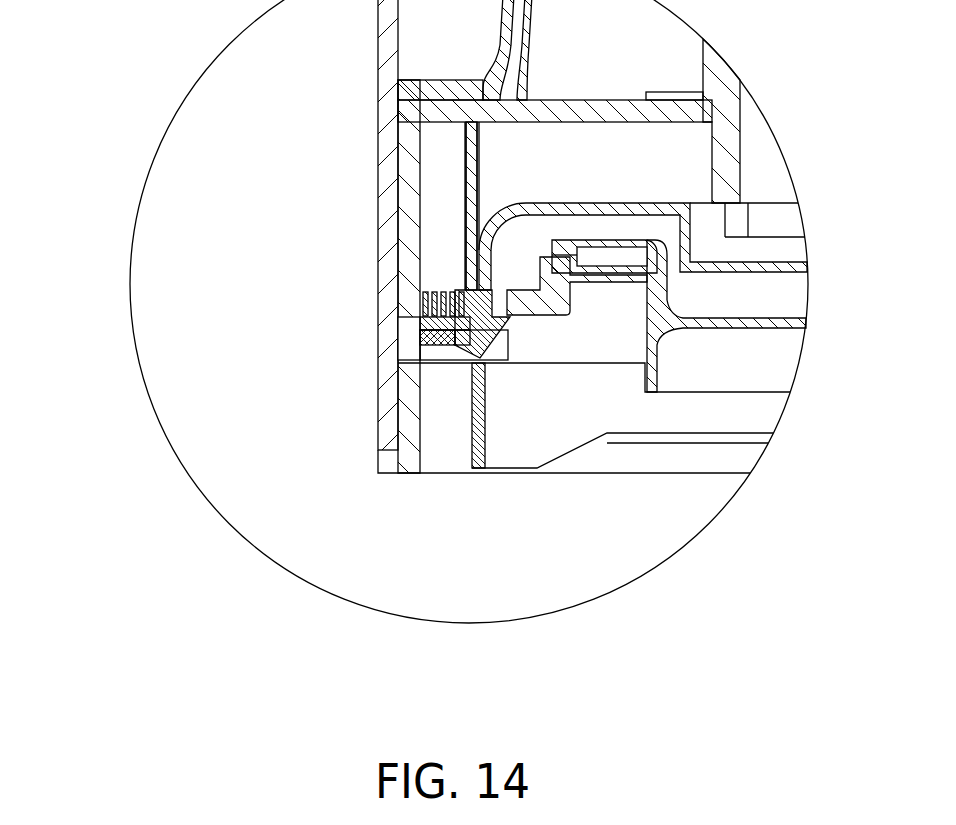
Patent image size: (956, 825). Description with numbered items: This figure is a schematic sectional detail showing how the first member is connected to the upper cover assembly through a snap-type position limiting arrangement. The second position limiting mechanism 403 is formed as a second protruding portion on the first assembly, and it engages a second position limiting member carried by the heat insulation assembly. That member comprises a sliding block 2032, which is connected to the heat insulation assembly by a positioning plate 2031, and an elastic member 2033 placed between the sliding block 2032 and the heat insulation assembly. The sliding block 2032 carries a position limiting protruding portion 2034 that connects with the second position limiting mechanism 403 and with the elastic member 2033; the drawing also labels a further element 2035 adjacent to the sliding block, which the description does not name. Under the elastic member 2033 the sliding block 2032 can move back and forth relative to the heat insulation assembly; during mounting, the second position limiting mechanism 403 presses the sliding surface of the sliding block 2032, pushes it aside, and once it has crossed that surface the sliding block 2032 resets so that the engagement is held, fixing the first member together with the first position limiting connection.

The second position limiting mechanism 403 is at (553, 322).
The positioning plate 2031 is at (427, 352).
The sliding block 2032 is at (462, 364).
The elastic member 2033 is at (432, 291).
The position limiting protruding portion 2034 is at (471, 312).
The sealing lip 2035 is at (481, 358).